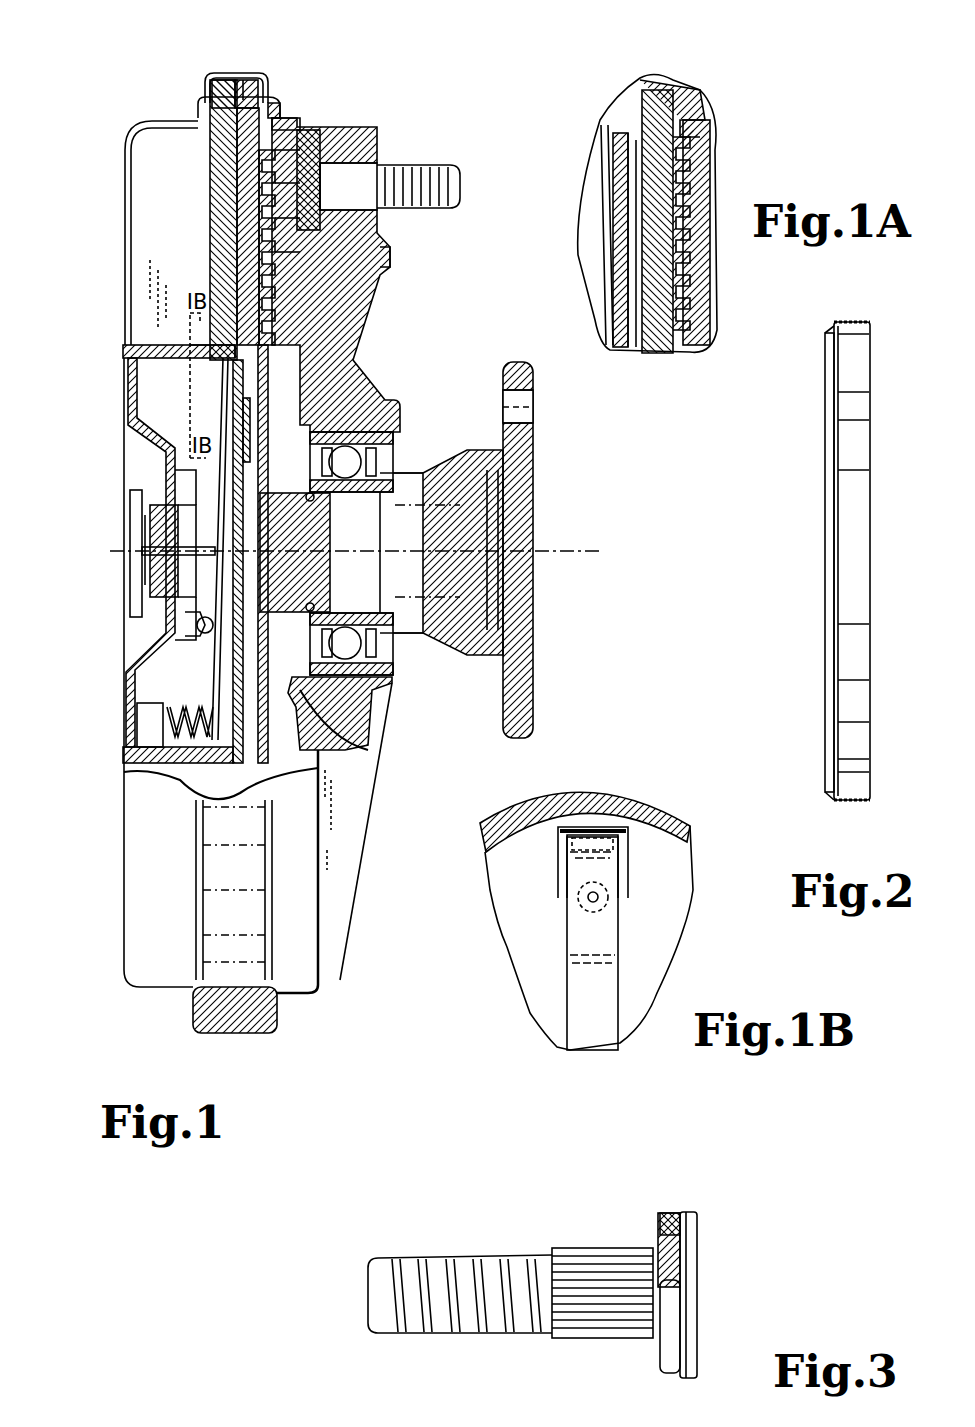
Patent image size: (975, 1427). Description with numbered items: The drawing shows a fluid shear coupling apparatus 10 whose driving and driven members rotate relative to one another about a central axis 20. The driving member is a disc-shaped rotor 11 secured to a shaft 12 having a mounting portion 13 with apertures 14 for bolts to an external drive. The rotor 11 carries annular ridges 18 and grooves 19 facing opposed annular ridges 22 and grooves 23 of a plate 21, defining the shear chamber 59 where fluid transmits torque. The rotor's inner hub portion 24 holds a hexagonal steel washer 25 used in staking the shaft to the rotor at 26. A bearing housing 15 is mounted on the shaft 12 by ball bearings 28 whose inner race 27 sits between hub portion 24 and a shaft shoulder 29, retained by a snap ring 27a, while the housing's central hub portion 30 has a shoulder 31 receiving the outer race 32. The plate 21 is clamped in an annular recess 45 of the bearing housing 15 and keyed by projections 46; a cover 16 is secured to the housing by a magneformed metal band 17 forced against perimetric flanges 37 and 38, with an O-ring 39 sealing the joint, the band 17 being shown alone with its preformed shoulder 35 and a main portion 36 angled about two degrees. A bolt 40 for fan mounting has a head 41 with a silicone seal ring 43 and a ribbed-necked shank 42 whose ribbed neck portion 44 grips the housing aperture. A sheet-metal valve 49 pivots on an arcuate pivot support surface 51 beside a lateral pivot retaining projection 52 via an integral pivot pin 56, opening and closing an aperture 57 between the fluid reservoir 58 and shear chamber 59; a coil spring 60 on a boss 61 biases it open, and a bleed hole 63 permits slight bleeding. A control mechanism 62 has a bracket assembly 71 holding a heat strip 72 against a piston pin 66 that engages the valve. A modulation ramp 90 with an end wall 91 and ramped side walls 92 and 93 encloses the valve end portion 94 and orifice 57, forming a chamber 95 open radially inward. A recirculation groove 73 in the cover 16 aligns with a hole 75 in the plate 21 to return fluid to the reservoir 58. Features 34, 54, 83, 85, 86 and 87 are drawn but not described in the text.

In FIG. 1, the fluid shear coupling apparatus 10 is at (118, 1007).
In FIG. 1, the rotor 11 is at (283, 330).
In FIG. 1, the shaft 12 is at (412, 622).
In FIG. 1, the mounting portion 13 is at (522, 452).
In FIG. 1, the apertures 14 is at (518, 407).
In FIG. 1, the bearing housing 15 is at (357, 150).
In FIG. 1A, the bearing housing 15 is at (712, 128).
In FIG. 1, the cover 16 is at (142, 140).
In FIG. 1B, the cover 16 is at (680, 818).
In FIG. 1, the band 17 is at (245, 905).
In FIG. 2, the band 17 is at (860, 460).
In FIG. 1, the annular ridges 18 is at (268, 162).
In FIG. 1A, the annular ridges 18 is at (684, 154).
In FIG. 1, the grooves 19 is at (266, 195).
In FIG. 1A, the grooves 19 is at (686, 178).
In FIG. 1, the central axis 20 is at (590, 551).
In FIG. 1, the plate 21 is at (207, 80).
In FIG. 1, the annular ridges 22 is at (266, 240).
In FIG. 1A, the annular ridges 22 is at (680, 198).
In FIG. 1, the grooves 23 is at (266, 256).
In FIG. 1A, the grooves 23 is at (680, 237).
In FIG. 1, the hub portion 24 is at (292, 430).
In FIG. 1, the hexagonal steel washer 25 is at (283, 500).
In FIG. 1, the staking 26 is at (190, 470).
In FIG. 1, the inner race 27 is at (378, 486).
In FIG. 1, the retaining snap ring 27a is at (308, 612).
In FIG. 1, the ball bearings 28 is at (380, 682).
In FIG. 1, the shoulder 29 is at (400, 512).
In FIG. 1, the central hub portion 30 is at (380, 742).
In FIG. 1, the shoulder 31 is at (392, 418).
In FIG. 1, the outer race 32 is at (385, 405).
In FIG. 1, the lower wall 34 is at (360, 758).
In FIG. 2, the shoulder 35 is at (827, 333).
In FIG. 2, the main portion 36 is at (855, 322).
In FIG. 1, the perimetric flange 37 is at (272, 100).
In FIG. 1, the perimetric flange 38 is at (226, 80).
In FIG. 1, the O-ring 39 is at (242, 82).
In FIG. 1, the bolt 40 is at (446, 170).
In FIG. 3, the bolt 40 is at (554, 1251).
In FIG. 3, the head 41 is at (690, 1262).
In FIG. 3, the ribbed-necked shank 42 is at (498, 1275).
In FIG. 3, the silicone seal ring 43 is at (665, 1213).
In FIG. 3, the ribbed neck portion 44 is at (608, 1322).
In FIG. 1, the annular recess 45 is at (305, 132).
In FIG. 1, the projections 46 is at (288, 118).
In FIG. 1, the valve 49 is at (190, 625).
In FIG. 1B, the valve 49 is at (603, 1030).
In FIG. 1, the arcuate pivot support surface 51 is at (215, 640).
In FIG. 1, the lateral pivot retaining projection 52 is at (200, 632).
In FIG. 1, the spring seat 54 is at (190, 628).
In FIG. 1, the pivot pin 56 is at (235, 600).
In FIG. 1, the aperture 57 is at (152, 362).
In FIG. 1B, the aperture 57 is at (560, 876).
In FIG. 1, the fluid reservoir 58 is at (185, 751).
In FIG. 1, the shear chamber 59 is at (374, 232).
In FIG. 1, the coil spring 60 is at (150, 702).
In FIG. 1, the boss 61 is at (150, 723).
In FIG. 1, the control mechanism 62 is at (93, 557).
In FIG. 1, the bleed hole 63 is at (330, 395).
In FIG. 1, the piston pin 66 is at (148, 602).
In FIG. 1, the bracket assembly 71 is at (130, 500).
In FIG. 1, the heat strip 72 is at (150, 540).
In FIG. 1A, the groove 73 is at (640, 163).
In FIG. 1A, the hole 75 is at (688, 117).
In FIG. 1, the cap center 83 is at (240, 76).
In FIG. 1, the bottom cap 85 is at (262, 1010).
In FIG. 1, the body flange 86 is at (390, 257).
In FIG. 1, the lower body wall 87 is at (345, 798).
In FIG. 1, the modulation ramp 90 is at (190, 388).
In FIG. 1B, the modulation ramp 90 is at (660, 936).
In FIG. 1, the end wall 91 is at (145, 354).
In FIG. 1B, the end wall 91 is at (610, 827).
In FIG. 1, the ramped side wall 92 is at (185, 392).
In FIG. 1B, the ramped side wall 92 is at (566, 880).
In FIG. 1B, the ramped side wall 93 is at (612, 897).
In FIG. 1B, the end portion 94 is at (604, 866).
In FIG. 1, the chamber 95 is at (370, 370).